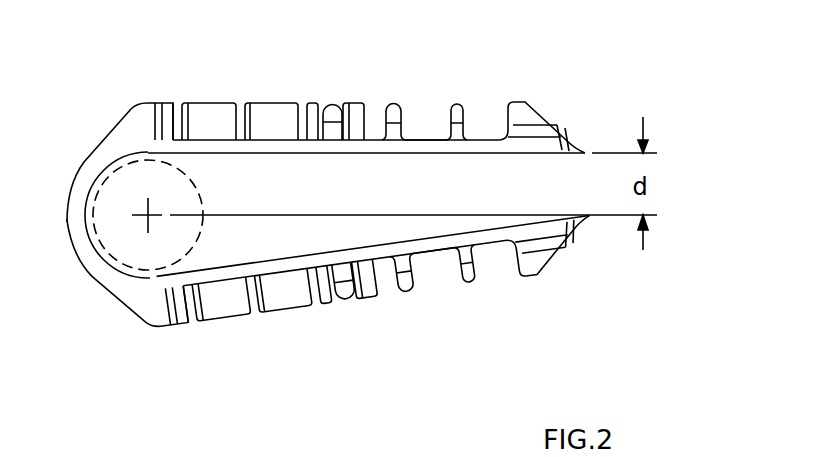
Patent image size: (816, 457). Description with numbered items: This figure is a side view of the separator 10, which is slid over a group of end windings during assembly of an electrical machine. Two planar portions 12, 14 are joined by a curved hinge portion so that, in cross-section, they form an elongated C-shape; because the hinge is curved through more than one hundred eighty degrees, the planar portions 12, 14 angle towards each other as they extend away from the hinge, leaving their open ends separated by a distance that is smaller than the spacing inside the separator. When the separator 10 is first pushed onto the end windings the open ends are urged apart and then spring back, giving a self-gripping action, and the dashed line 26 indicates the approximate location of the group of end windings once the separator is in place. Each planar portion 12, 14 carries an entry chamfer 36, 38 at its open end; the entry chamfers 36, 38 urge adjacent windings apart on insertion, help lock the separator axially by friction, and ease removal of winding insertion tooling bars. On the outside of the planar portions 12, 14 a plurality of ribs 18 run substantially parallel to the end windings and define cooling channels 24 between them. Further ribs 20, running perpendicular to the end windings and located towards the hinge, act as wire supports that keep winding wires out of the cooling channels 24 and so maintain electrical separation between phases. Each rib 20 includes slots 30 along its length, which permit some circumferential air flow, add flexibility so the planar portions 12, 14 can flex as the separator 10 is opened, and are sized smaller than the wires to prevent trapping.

The separator 10 is at (630, 366).
The planar portion 12 is at (377, 258).
The planar portion 14 is at (378, 148).
The ribs 18 is at (392, 107).
The ribs 20 is at (265, 104).
The cooling channels 24 is at (430, 128).
The dashed line 26 is at (196, 185).
The slots 30 is at (182, 108).
The entry chamfer 36 is at (550, 252).
The entry chamfer 38 is at (548, 113).